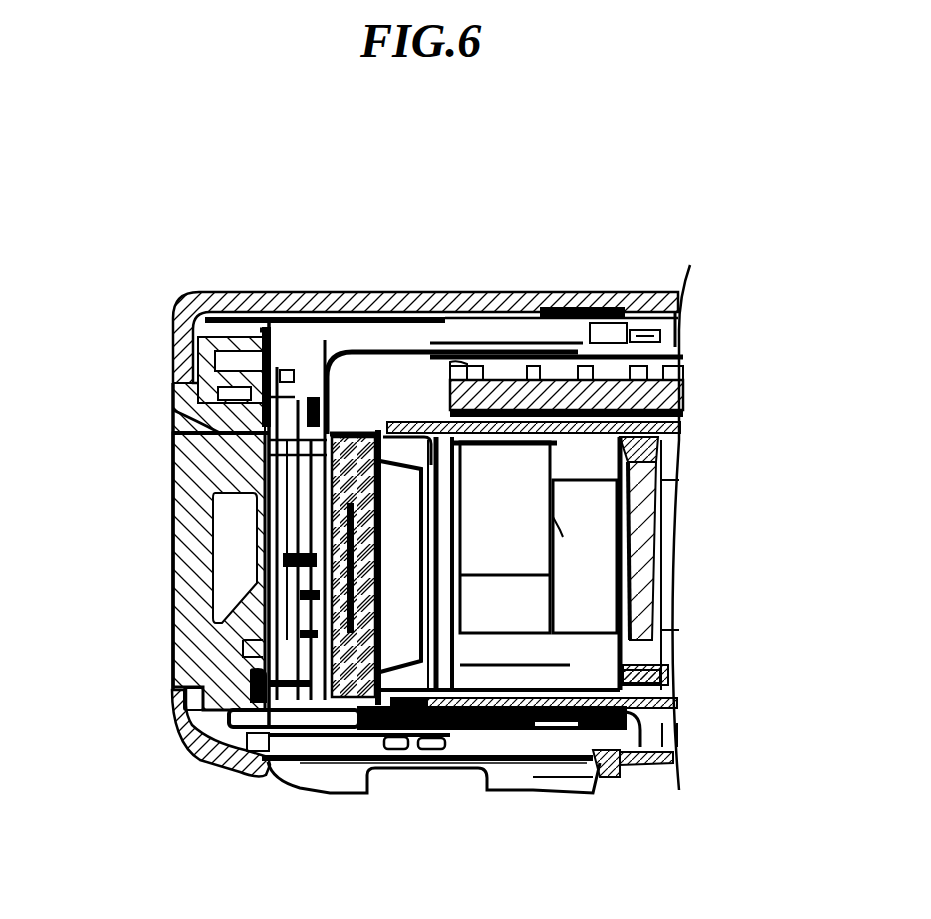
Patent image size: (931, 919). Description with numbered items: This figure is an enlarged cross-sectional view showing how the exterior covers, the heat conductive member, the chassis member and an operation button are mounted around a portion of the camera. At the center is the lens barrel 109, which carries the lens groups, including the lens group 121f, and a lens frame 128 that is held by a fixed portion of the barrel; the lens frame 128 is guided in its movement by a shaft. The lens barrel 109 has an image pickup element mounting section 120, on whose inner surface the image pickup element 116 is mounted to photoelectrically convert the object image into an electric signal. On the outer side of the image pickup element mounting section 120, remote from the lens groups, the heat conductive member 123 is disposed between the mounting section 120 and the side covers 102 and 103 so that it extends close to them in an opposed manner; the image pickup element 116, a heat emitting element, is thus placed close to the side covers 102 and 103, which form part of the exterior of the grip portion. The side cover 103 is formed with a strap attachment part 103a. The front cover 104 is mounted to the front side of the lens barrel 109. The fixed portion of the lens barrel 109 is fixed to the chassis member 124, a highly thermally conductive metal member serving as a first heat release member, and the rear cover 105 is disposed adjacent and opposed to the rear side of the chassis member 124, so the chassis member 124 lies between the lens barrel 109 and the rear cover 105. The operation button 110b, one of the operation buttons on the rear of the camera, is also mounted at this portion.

The side cover 102 is at (173, 394).
The side cover 103 is at (161, 532).
The strap attachment part 103a is at (222, 550).
The front cover 104 is at (447, 291).
The rear cover 105 is at (622, 771).
The lens barrel 109 is at (697, 567).
The operation button 110b is at (285, 772).
The image pickup element 116 is at (352, 682).
The image pickup element mounting section 120 is at (308, 442).
The lens group 121f is at (640, 462).
The heat conductive member 123 is at (268, 398).
The chassis member 124 is at (675, 708).
The lens frame 128 is at (667, 449).